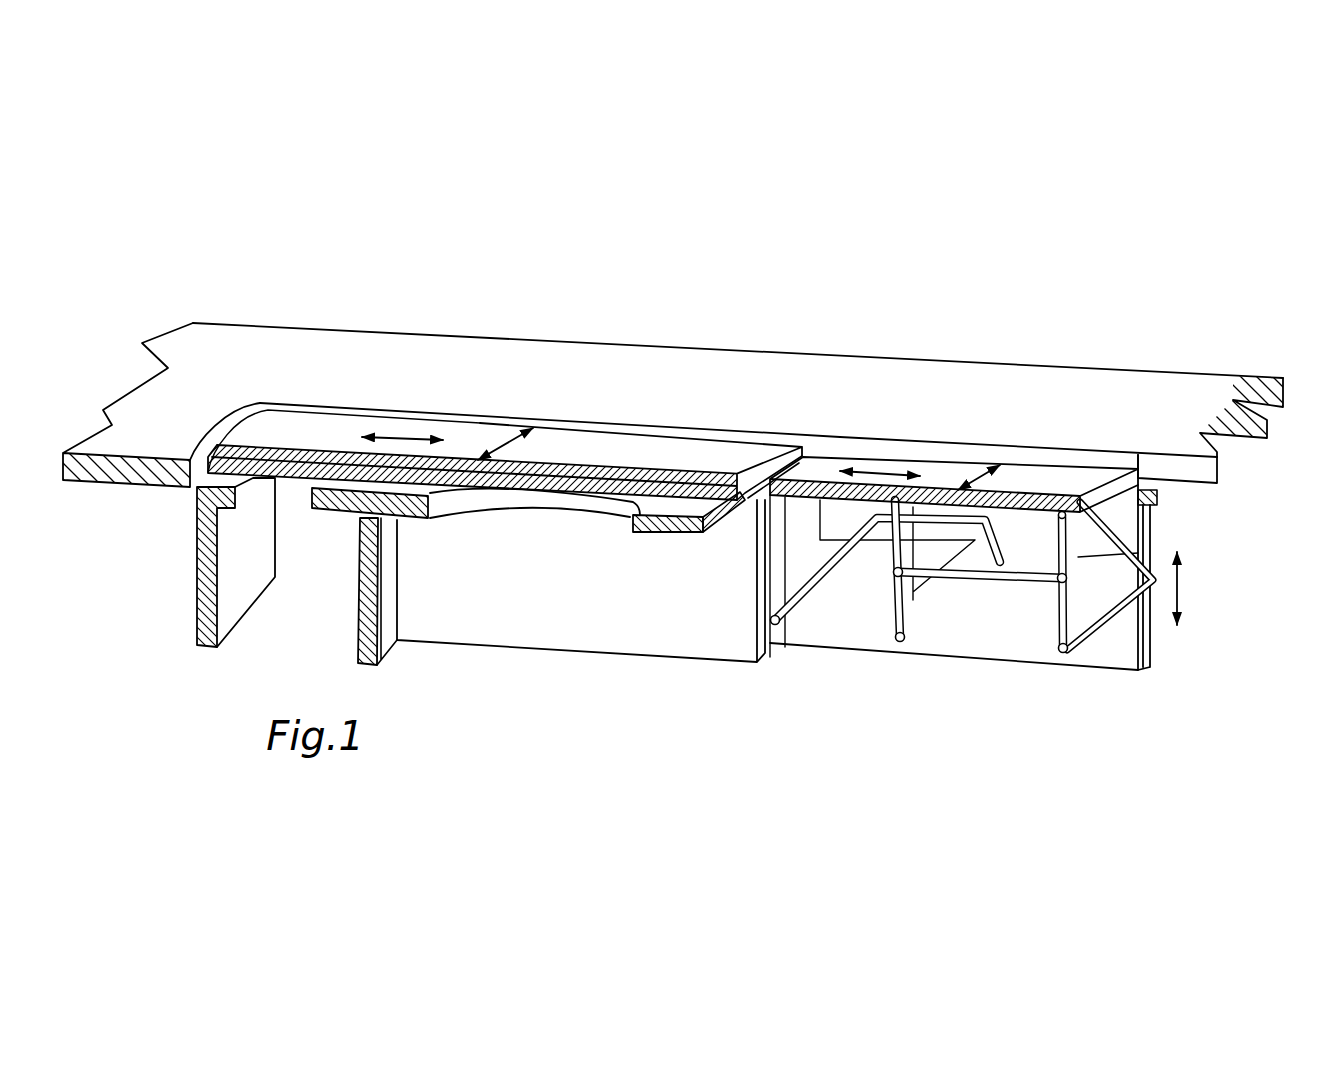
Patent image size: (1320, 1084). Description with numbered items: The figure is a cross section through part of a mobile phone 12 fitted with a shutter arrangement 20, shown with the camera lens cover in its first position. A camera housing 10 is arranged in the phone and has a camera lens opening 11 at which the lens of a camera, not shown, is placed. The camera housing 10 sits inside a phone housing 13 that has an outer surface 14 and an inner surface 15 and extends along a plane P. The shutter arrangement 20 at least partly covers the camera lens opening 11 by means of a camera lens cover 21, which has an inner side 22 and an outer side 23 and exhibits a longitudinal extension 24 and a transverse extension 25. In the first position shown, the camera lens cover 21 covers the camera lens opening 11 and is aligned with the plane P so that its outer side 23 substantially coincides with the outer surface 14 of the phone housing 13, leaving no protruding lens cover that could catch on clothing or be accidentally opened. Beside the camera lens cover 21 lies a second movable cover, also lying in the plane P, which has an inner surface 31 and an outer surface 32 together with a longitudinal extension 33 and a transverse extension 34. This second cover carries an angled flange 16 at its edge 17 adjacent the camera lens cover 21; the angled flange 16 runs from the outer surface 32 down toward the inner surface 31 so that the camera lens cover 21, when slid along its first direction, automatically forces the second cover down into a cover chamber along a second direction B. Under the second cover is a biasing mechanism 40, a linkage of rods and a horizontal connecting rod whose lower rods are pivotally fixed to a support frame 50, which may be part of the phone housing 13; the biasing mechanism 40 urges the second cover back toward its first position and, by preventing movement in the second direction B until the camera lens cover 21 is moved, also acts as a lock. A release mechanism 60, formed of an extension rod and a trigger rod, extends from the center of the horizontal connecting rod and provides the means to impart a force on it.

The camera housing 10 is at (583, 610).
The camera lens opening 11 is at (465, 500).
The mobile phone 12 is at (830, 338).
The phone housing 13 is at (258, 343).
The outer surface 14 is at (899, 378).
The inner surface 15 is at (1203, 485).
The angled flange 16 is at (738, 528).
The edge 17 is at (803, 455).
The shutter arrangement 20 is at (1106, 306).
The camera lens cover 21 is at (293, 427).
The inner side 22 is at (287, 478).
The outer side 23 is at (677, 450).
The longitudinal extension 24 is at (398, 440).
The transverse extension 25 is at (535, 430).
The inner surface 31 is at (1105, 497).
The outer surface 32 is at (1057, 472).
The longitudinal extension 33 is at (877, 462).
The transverse extension 34 is at (995, 463).
The biasing mechanism 40 is at (1048, 619).
The support frame 50 is at (967, 630).
The release mechanism 60 is at (836, 594).
The second direction B is at (1178, 584).